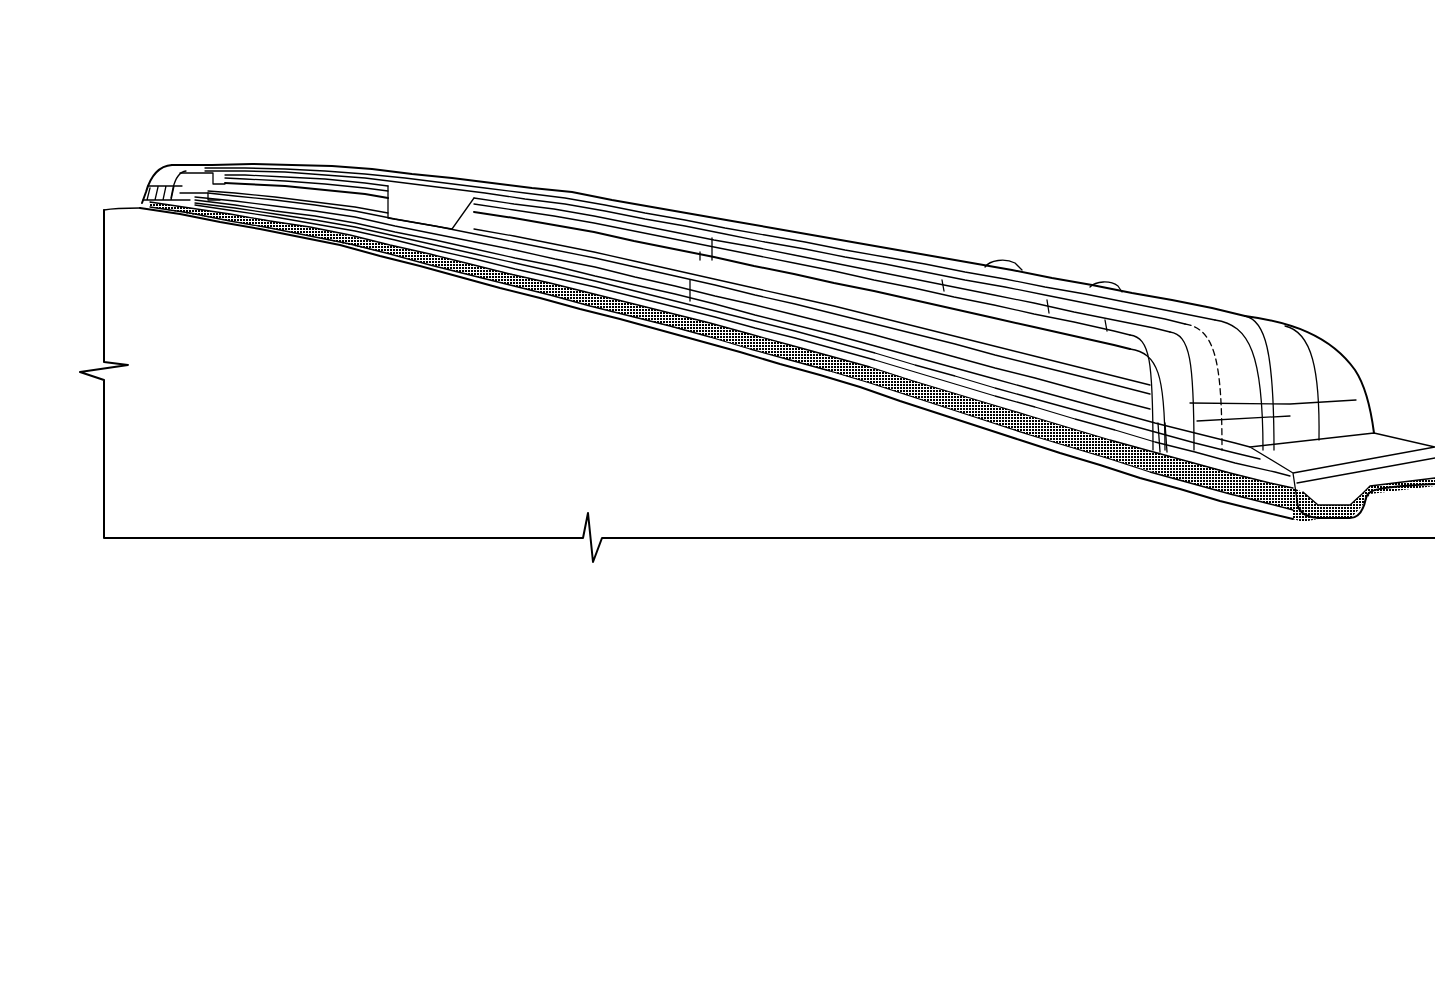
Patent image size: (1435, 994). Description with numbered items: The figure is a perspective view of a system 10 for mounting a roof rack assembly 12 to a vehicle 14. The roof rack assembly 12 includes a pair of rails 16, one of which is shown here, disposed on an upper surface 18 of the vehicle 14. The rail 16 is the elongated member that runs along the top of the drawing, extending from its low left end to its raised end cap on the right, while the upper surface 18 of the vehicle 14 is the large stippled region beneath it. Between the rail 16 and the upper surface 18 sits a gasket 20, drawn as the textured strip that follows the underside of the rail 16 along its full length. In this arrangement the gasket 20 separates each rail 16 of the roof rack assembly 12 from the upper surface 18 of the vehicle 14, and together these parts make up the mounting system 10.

The system 10 is at (908, 104).
The roof rack assembly 12 is at (737, 172).
The vehicle 14 is at (300, 519).
The rail 16 is at (993, 262).
The upper surface 18 is at (336, 386).
The gasket 20 is at (1252, 498).